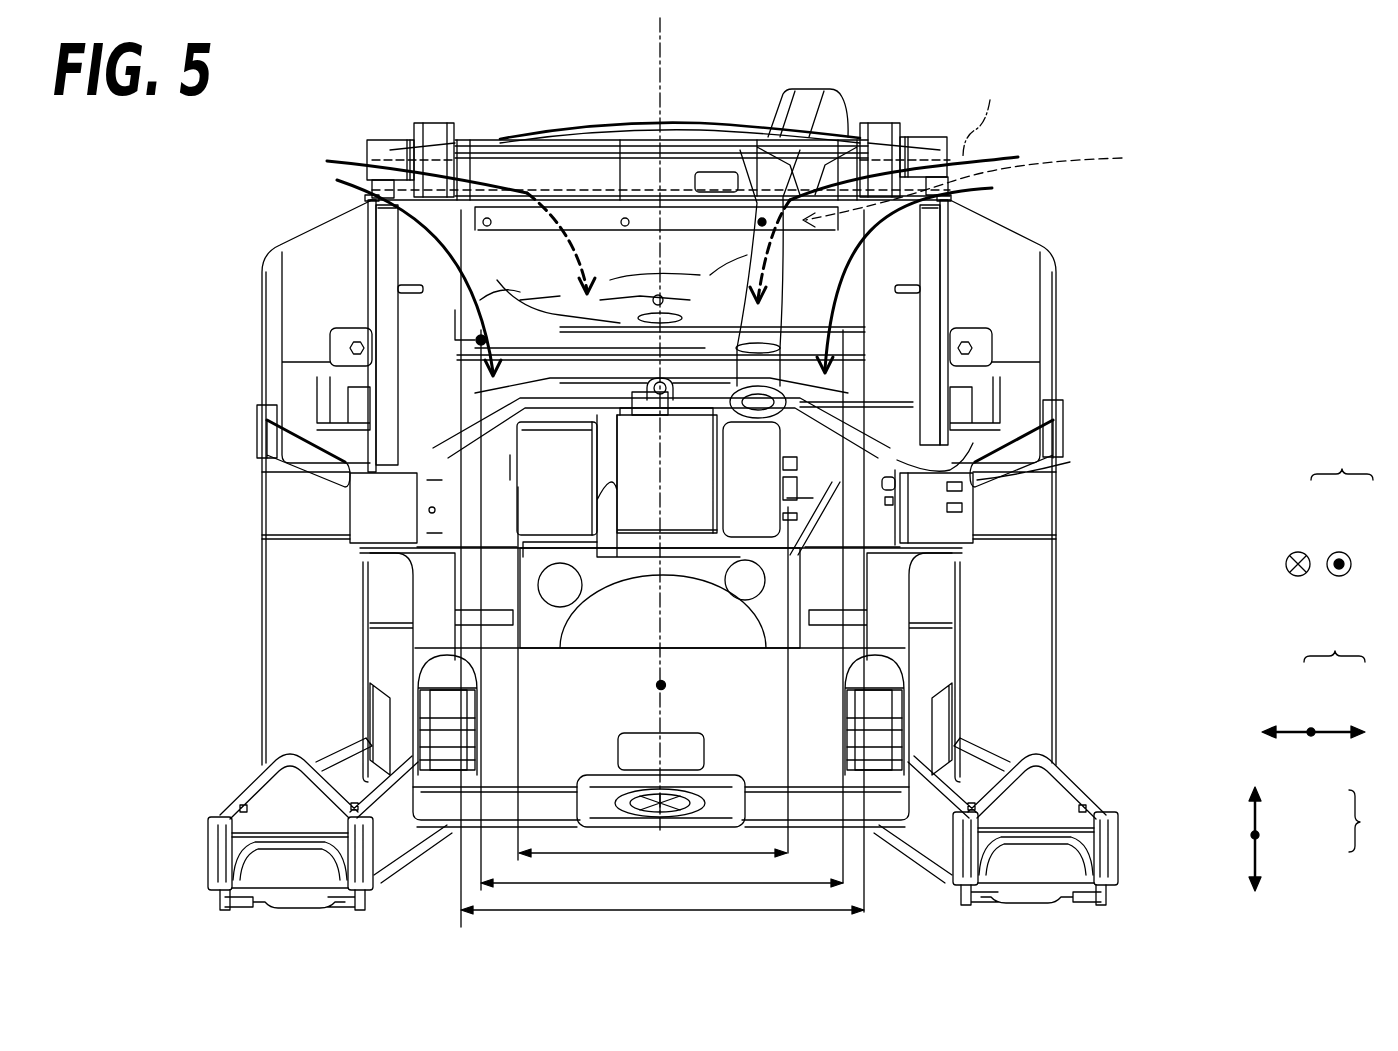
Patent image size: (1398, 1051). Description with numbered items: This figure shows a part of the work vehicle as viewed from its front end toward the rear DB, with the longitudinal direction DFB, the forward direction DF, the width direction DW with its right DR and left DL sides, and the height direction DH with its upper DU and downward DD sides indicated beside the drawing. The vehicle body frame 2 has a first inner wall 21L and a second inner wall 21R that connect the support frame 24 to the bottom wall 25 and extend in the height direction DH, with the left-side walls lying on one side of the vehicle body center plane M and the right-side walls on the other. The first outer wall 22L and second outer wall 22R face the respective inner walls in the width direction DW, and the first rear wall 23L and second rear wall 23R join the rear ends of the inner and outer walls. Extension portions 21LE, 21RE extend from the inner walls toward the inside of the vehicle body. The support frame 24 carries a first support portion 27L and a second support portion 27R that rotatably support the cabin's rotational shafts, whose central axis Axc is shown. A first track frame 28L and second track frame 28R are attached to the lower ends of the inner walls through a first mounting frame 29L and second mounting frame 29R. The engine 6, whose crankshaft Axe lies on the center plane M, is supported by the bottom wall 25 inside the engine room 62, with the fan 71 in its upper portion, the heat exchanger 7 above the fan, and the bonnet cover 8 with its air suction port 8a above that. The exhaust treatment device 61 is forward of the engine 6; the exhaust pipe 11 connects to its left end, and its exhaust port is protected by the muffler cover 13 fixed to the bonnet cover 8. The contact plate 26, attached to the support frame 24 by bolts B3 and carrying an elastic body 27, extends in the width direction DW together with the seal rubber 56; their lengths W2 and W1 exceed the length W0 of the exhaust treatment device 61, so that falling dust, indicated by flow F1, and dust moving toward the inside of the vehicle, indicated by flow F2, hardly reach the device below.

The vehicle body frame 2 is at (1068, 565).
The engine 6 is at (797, 573).
The heat exchanger 7 is at (517, 163).
The bonnet cover 8 is at (718, 120).
The air suction port 8a is at (581, 121).
The exhaust pipe 11 is at (978, 184).
The muffler cover 13 is at (808, 100).
The second inner wall 21R is at (455, 290).
The first inner wall 21L is at (968, 432).
The extension portion 21RE is at (390, 268).
The extension portion 21LE is at (937, 320).
The second outer wall 22R is at (263, 338).
The first outer wall 22L is at (1060, 660).
The second rear wall 23R is at (298, 243).
The first rear wall 23L is at (1003, 690).
The support frame 24 is at (430, 237).
The bottom wall 25 is at (458, 827).
The contact plate 26 is at (722, 215).
The elastic body 27 is at (620, 158).
The second support portion 27R is at (435, 128).
The first support portion 27L is at (880, 135).
The second track frame 28R is at (210, 838).
The first track frame 28L is at (1120, 845).
The second mounting frame 29R is at (388, 882).
The first mounting frame 29L is at (938, 882).
The seal rubber 56 is at (548, 172).
The exhaust treatment device 61 is at (516, 483).
The engine room 62 is at (606, 540).
The fan 71 is at (267, 420).
The bolt B3 is at (760, 219).
The flow F1 is at (992, 188).
The flow F2 is at (990, 157).
The vehicle body center plane M is at (660, 47).
The central axis Axc is at (987, 116).
The crankshaft Axe is at (658, 685).
The length of the exhaust treatment device W0 is at (653, 865).
The length of the seal rubber W1 is at (662, 895).
The length of the contact plate W2 is at (662, 922).
The longitudinal direction DFB is at (1342, 463).
The rear DB is at (1296, 550).
The forward DF is at (1339, 550).
The width direction DW is at (1334, 647).
The right direction DR is at (1289, 730).
The left direction DL is at (1330, 730).
The upper portion DU is at (1257, 815).
The downward direction DD is at (1257, 863).
The height direction DH is at (1371, 821).